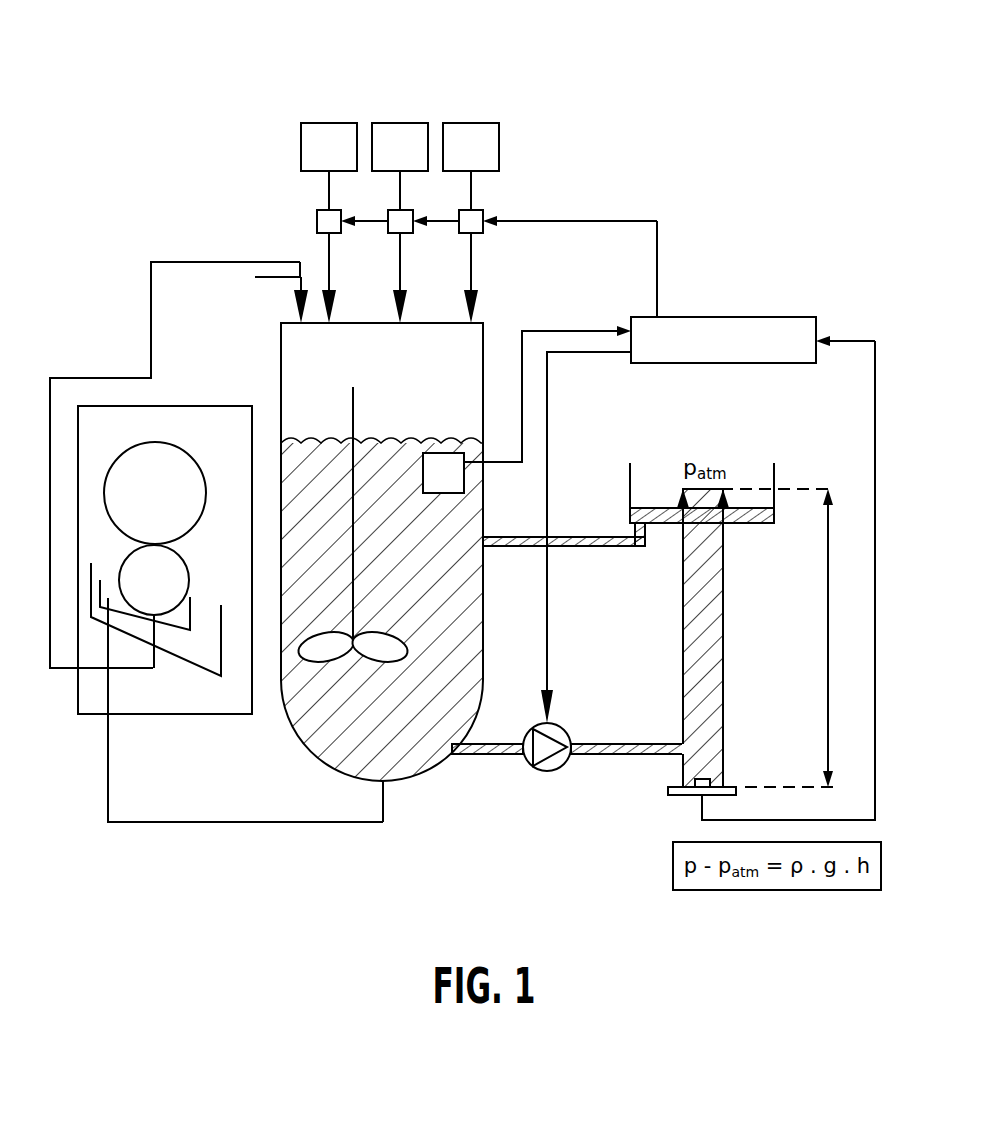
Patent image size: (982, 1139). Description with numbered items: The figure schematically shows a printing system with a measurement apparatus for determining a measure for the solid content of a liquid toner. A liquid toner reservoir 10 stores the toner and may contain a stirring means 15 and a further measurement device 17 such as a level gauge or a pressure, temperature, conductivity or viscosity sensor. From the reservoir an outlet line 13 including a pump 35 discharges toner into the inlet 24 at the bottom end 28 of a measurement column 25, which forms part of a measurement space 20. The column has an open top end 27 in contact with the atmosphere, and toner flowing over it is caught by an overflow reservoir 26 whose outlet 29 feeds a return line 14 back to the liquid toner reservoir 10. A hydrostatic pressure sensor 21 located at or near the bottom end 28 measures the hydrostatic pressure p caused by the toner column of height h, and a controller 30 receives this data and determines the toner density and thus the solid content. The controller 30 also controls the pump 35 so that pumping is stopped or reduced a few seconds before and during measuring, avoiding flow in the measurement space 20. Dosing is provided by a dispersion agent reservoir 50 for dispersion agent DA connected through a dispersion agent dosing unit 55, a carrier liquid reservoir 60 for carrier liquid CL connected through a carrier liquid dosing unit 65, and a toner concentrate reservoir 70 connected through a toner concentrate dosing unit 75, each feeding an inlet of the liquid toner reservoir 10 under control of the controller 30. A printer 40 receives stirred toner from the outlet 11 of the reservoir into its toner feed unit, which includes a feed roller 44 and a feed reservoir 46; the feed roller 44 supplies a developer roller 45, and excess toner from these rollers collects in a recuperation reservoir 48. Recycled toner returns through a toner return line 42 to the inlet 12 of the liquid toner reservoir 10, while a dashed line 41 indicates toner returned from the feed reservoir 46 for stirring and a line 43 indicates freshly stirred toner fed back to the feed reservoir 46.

The liquid toner reservoir 10 is at (485, 373).
The outlet 11 is at (383, 803).
The inlet 12 is at (255, 277).
The outlet line 13 is at (510, 754).
The return line 14 is at (518, 547).
The stirring means 15 is at (323, 652).
The measurement device 17 is at (438, 462).
The measurement space 20 is at (766, 634).
The hydrostatic pressure sensor 21 is at (714, 768).
The inlet 24 is at (686, 746).
The measurement column 25 is at (683, 615).
The overflow reservoir 26 is at (630, 475).
The open top end 27 is at (720, 486).
The bottom end 28 is at (672, 806).
The outlet 29 is at (641, 522).
The controller 30 is at (729, 317).
The pump 35 is at (563, 737).
The printer 40 is at (146, 714).
The dashed line 41 is at (155, 655).
The toner return line 42 is at (213, 262).
The line 43 is at (227, 824).
The feed roller 44 is at (140, 568).
The developer roller 45 is at (163, 462).
The feed reservoir 46 is at (197, 609).
The recuperation reservoir 48 is at (222, 631).
The dispersion agent reservoir 50 is at (338, 123).
The dispersion agent dosing unit 55 is at (318, 220).
The carrier liquid reservoir 60 is at (399, 123).
The carrier liquid dosing unit 65 is at (404, 233).
The toner concentrate reservoir 70 is at (483, 123).
The toner concentrate dosing unit 75 is at (483, 215).